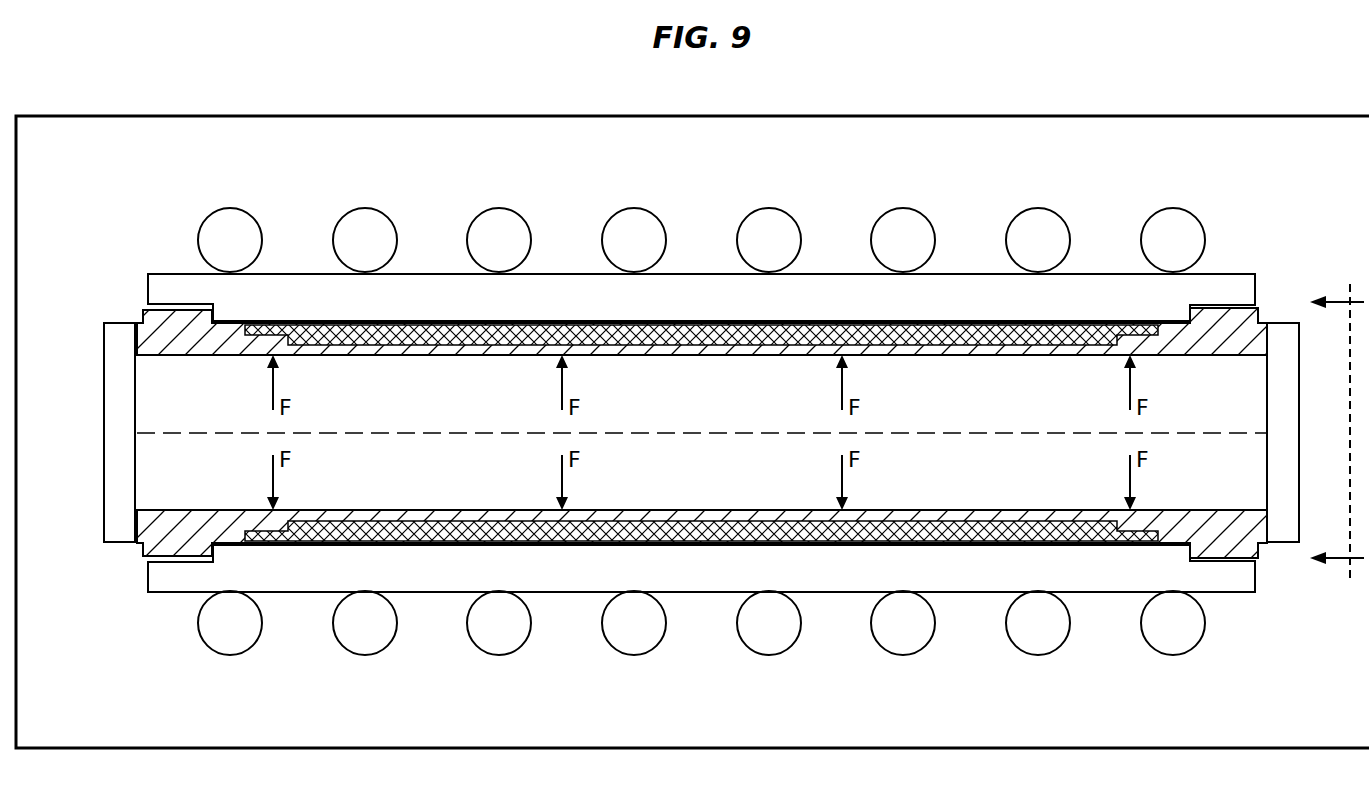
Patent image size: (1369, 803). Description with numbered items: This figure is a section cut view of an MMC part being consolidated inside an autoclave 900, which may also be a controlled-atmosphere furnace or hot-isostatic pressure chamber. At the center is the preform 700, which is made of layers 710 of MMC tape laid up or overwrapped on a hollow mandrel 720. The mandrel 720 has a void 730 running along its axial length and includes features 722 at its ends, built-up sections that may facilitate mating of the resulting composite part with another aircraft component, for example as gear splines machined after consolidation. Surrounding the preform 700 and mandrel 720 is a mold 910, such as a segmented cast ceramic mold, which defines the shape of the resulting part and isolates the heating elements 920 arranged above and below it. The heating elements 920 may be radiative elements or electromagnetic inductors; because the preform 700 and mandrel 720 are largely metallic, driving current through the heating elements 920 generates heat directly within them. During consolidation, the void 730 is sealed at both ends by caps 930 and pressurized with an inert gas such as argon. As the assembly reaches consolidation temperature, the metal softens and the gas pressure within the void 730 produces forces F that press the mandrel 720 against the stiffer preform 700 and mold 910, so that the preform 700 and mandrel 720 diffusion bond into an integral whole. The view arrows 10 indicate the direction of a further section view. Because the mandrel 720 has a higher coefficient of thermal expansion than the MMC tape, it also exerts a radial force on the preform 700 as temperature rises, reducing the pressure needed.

The autoclave 900 is at (684, 735).
The mold 910 is at (441, 274).
The heating elements 920 is at (701, 431).
The caps 930 is at (113, 480).
The preform 700 is at (727, 389).
The layers 710 is at (425, 340).
The mandrel 720 is at (495, 353).
The features 722 is at (1258, 306).
The void 730 is at (990, 402).
The view arrows 10 is at (1337, 428).